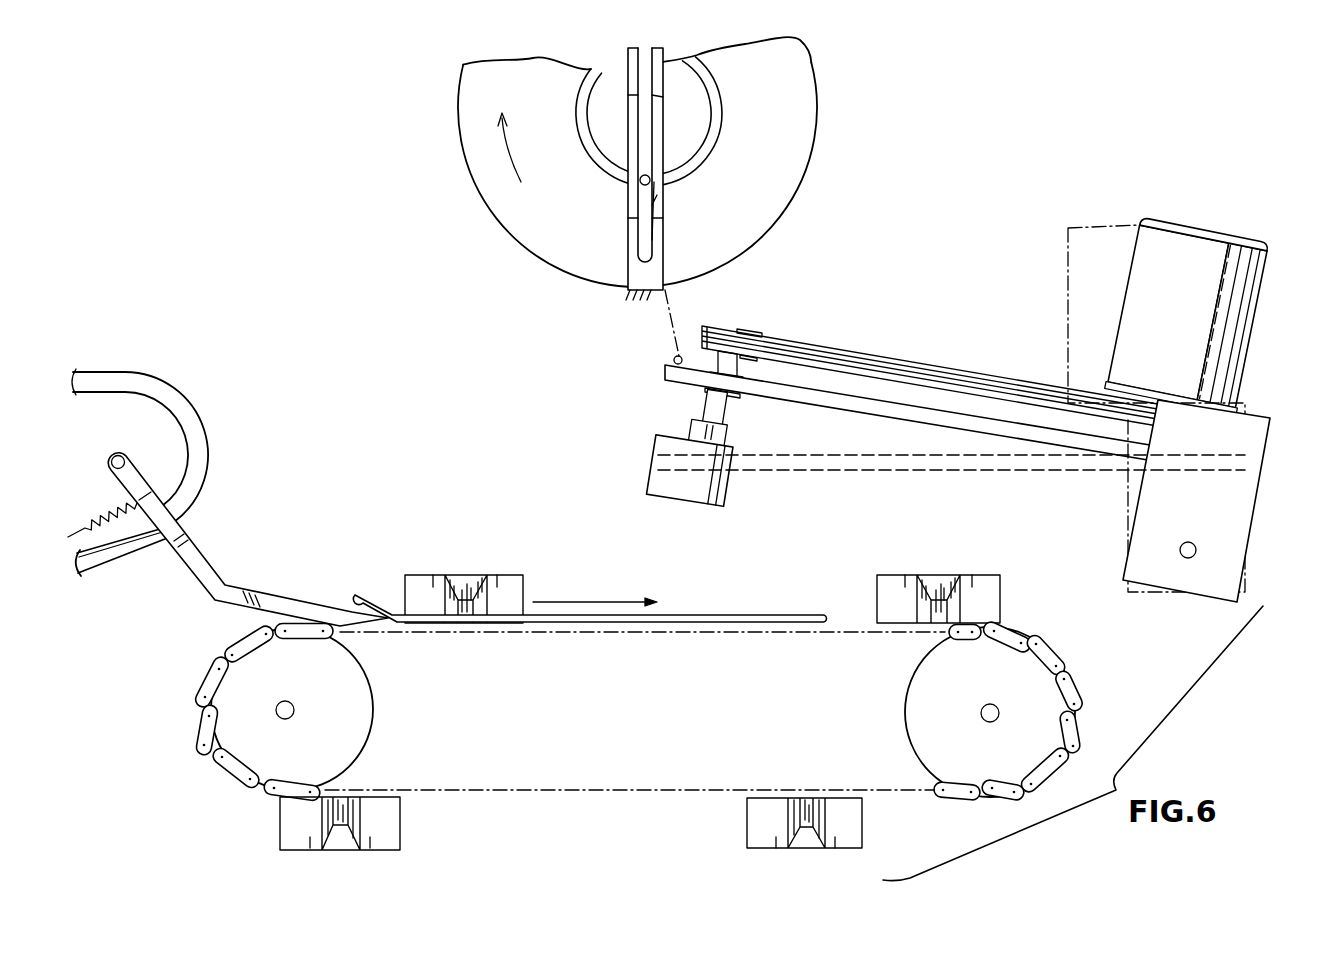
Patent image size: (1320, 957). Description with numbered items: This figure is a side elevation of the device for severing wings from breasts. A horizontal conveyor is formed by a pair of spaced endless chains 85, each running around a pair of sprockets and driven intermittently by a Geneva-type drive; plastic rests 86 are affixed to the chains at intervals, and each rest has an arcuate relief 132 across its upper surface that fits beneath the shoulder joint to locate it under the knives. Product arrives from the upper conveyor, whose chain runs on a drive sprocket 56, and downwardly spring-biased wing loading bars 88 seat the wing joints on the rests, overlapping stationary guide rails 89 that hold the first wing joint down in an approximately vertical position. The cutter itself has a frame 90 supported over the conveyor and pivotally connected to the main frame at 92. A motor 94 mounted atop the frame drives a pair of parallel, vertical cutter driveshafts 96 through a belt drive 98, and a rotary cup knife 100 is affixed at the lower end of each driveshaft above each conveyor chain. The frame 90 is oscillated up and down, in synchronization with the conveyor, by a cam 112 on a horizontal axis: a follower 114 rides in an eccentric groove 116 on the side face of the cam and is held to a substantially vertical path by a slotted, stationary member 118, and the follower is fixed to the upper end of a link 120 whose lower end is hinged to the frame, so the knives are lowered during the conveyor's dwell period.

The drive sprocket 56 is at (157, 422).
The endless chains 85 is at (660, 792).
The rests 86 is at (856, 825).
The wing loading bars 88 is at (277, 593).
The stationary guide rails 89 is at (780, 613).
The frame 90 is at (665, 371).
The pivotal connection 92 is at (1188, 558).
The motor 94 is at (1188, 316).
The cutter driveshafts 96 is at (712, 408).
The belt drive 98 is at (862, 355).
The rotary cup knife 100 is at (740, 497).
The cam 112 is at (776, 166).
The follower 114 is at (641, 182).
The eccentric groove 116 is at (716, 90).
The slotted stationary member 118 is at (643, 277).
The link 120 is at (672, 308).
The arcuate relief 132 is at (457, 590).